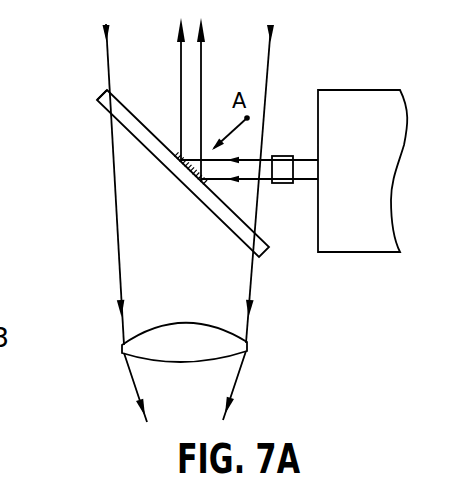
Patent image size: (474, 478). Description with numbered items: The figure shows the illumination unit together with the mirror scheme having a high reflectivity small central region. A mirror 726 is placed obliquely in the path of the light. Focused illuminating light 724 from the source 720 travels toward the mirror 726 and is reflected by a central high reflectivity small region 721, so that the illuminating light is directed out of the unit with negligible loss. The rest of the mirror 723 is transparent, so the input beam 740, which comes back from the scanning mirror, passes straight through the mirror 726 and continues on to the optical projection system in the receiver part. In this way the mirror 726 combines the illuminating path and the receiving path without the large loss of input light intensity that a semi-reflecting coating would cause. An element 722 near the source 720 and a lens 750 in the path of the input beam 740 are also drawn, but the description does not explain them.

The source 720 is at (367, 250).
The central high reflectivity small region 721 is at (177, 175).
The collimator lens 722 is at (280, 184).
The rest of the mirror 723 is at (259, 222).
The focused illuminating light 724 is at (250, 160).
The mirror 726 is at (102, 103).
The input beam 740 is at (107, 60).
The condenser lens 750 is at (225, 347).